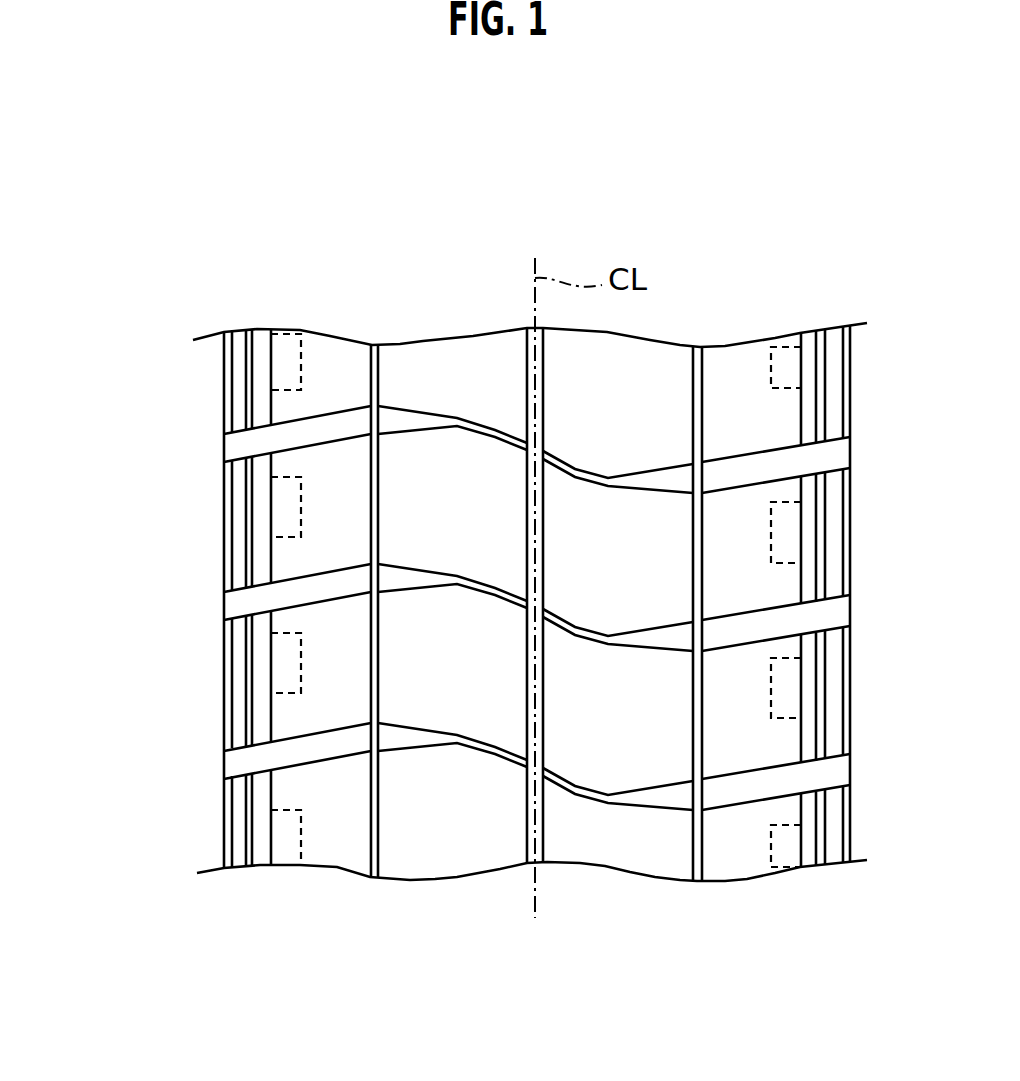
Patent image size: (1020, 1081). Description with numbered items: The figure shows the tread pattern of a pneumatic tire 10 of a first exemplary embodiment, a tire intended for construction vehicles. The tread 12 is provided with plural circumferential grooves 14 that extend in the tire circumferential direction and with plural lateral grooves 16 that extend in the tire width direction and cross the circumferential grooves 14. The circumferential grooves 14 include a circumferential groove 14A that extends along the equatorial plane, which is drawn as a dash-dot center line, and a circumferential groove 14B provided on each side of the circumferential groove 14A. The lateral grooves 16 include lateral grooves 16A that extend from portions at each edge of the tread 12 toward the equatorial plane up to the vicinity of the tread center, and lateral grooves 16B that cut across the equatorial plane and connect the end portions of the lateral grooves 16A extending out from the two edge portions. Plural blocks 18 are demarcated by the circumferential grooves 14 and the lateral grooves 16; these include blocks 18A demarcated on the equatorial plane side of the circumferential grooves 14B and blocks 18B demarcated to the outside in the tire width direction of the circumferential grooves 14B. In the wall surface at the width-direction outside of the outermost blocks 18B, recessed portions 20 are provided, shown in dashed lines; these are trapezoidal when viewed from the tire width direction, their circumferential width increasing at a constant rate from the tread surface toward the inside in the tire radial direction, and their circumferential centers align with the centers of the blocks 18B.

The pneumatic tire 10 is at (178, 224).
The tread 12 is at (325, 333).
The circumferential grooves 14 is at (450, 511).
The circumferential groove 14A is at (507, 533).
The circumferential groove 14B is at (375, 343).
The lateral grooves 16 is at (743, 523).
The lateral grooves 16A is at (837, 457).
The lateral grooves 16B is at (583, 463).
The blocks 18 is at (435, 608).
The blocks 18A is at (413, 530).
The blocks 18B is at (288, 463).
The recessed portions 20 is at (283, 665).